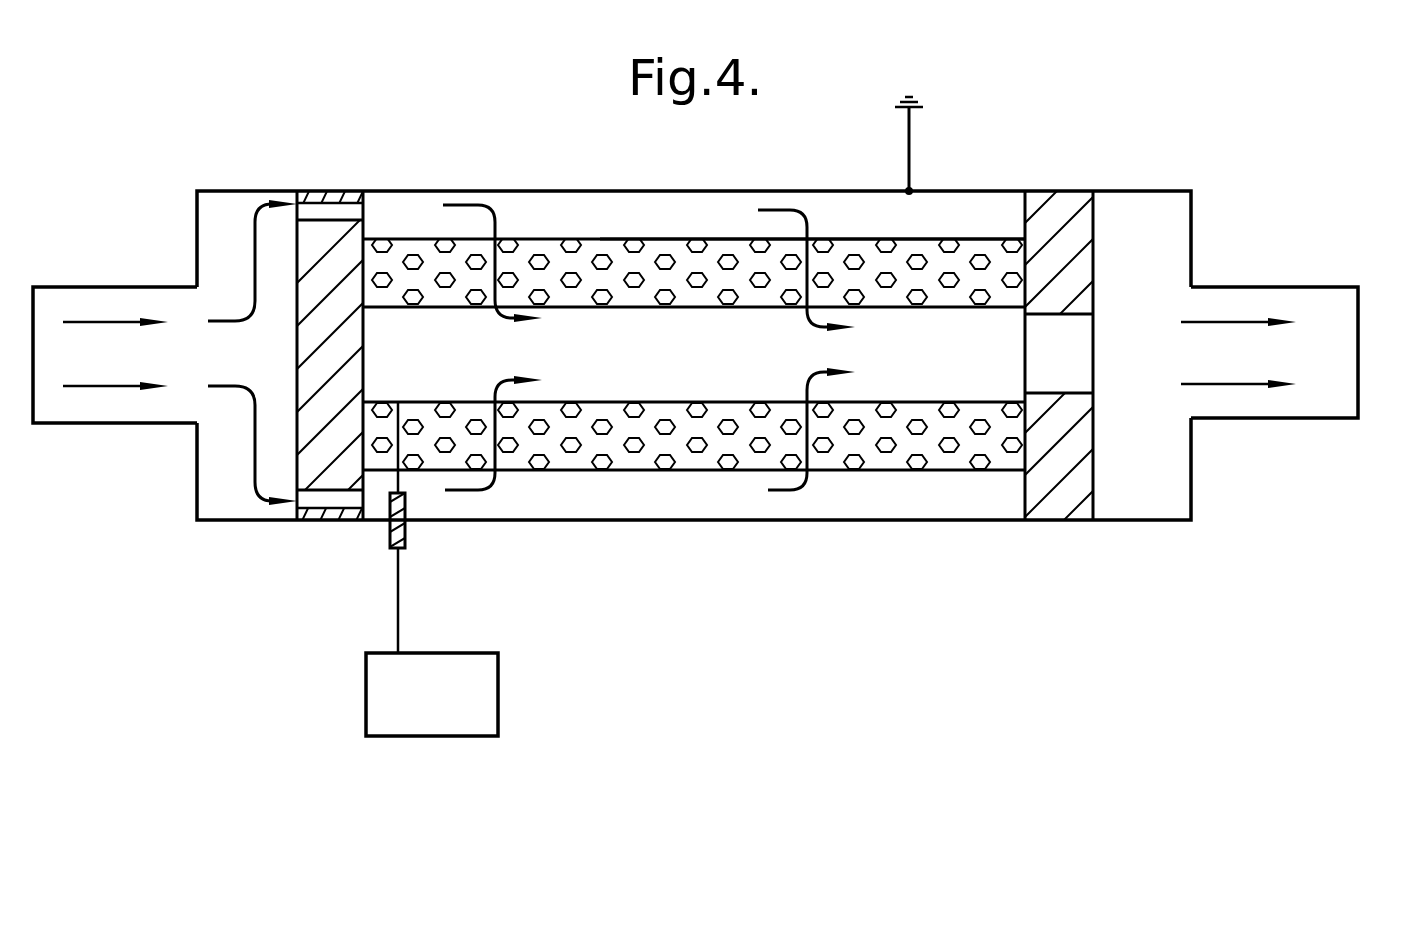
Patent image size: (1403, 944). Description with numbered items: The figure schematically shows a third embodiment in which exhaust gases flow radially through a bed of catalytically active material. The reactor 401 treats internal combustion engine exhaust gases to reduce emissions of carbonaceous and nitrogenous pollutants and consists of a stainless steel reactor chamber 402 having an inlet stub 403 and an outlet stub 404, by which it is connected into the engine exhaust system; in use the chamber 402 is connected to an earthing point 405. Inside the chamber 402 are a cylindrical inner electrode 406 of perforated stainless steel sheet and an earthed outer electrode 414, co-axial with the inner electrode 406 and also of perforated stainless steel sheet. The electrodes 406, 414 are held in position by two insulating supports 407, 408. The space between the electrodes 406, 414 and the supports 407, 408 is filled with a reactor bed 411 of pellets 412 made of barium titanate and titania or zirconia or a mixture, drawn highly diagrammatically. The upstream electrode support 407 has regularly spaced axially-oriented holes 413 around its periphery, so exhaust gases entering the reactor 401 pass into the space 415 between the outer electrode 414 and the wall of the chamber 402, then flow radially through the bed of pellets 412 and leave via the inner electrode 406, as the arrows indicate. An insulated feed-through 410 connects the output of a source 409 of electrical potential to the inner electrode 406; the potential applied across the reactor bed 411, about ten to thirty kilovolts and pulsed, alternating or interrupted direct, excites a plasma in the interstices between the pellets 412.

The reactor 401 is at (610, 545).
The reactor chamber 402 is at (843, 521).
The inlet stub 403 is at (113, 287).
The outlet stub 404 is at (1265, 287).
The earthing point 405 is at (910, 145).
The inner electrode 406 is at (935, 403).
The upstream electrode support 407 is at (335, 468).
The insulating support 408 is at (1070, 213).
The source of electrical potential 409 is at (442, 738).
The insulated feed-through 410 is at (408, 530).
The reactor bed 411 is at (540, 240).
The pellets 412 is at (410, 250).
The axially-oriented holes 413 is at (320, 207).
The outer electrode 414 is at (712, 240).
The space 415 is at (843, 215).